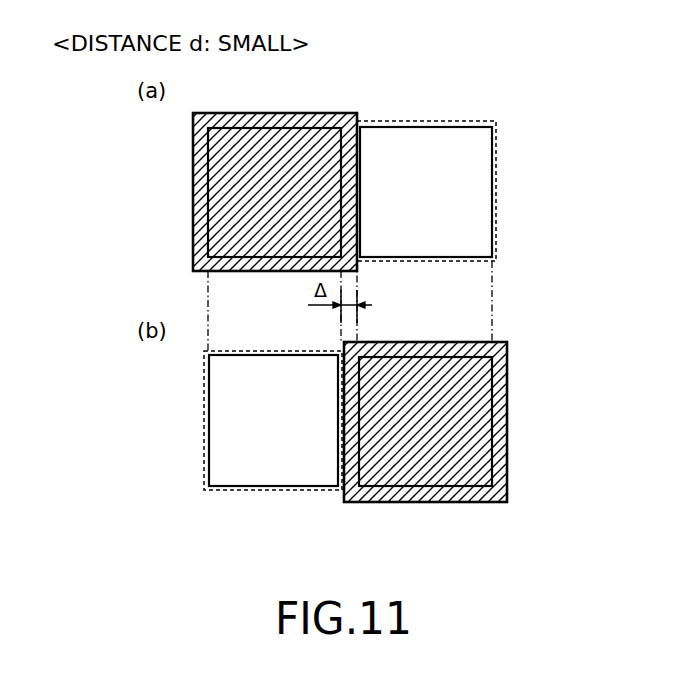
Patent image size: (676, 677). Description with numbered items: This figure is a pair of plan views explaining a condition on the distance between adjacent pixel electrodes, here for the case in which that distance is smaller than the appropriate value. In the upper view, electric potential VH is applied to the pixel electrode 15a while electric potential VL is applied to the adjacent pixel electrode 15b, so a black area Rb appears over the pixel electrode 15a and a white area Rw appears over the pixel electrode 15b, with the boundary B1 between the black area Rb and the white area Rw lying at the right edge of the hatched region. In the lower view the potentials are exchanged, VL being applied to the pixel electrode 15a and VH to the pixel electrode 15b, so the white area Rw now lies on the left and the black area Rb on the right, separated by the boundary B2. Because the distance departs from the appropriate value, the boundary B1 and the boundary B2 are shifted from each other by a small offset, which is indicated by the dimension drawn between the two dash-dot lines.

The pixel electrode 15a is at (208, 196).
The pixel electrode 15b is at (492, 196).
The black area Rb is at (193, 169).
The white area Rw is at (496, 175).
The boundary B1 is at (357, 113).
The boundary B2 is at (343, 502).